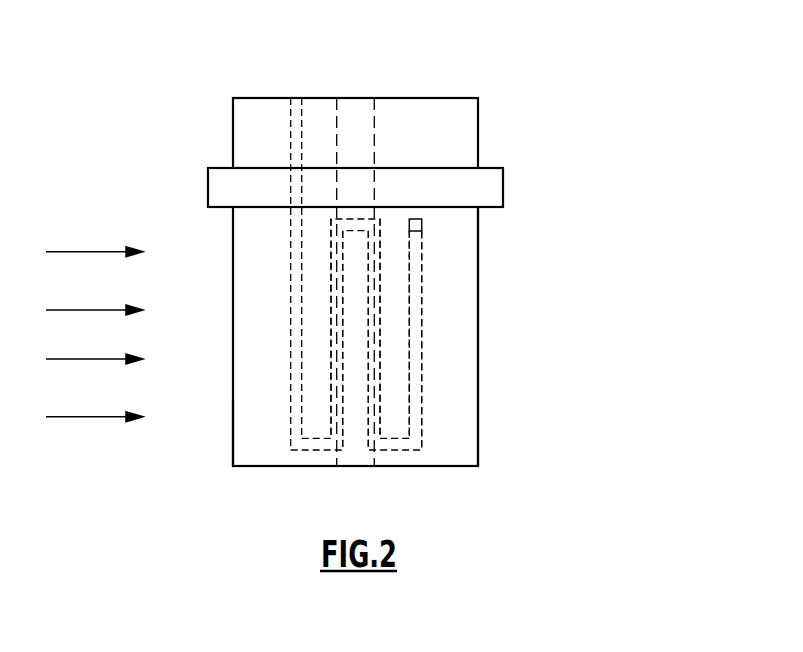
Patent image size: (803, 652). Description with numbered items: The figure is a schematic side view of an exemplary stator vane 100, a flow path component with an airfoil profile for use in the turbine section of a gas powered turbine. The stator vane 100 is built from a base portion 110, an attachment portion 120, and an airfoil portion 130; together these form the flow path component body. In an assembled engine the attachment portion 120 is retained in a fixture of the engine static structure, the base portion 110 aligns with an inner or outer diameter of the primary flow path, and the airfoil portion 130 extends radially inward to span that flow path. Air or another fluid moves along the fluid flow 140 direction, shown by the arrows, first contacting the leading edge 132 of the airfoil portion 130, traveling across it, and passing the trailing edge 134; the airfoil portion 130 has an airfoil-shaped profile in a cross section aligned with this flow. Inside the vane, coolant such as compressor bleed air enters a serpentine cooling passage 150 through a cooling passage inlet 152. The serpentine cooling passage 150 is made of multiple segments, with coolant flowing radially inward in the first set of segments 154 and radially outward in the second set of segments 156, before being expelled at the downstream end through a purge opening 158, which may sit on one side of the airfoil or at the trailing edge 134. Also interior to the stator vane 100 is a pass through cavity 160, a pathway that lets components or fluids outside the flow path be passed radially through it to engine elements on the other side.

The stator vane 100 is at (642, 48).
The base portion 110 is at (503, 182).
The attachment portion 120 is at (443, 98).
The airfoil portion 130 is at (478, 395).
The leading edge 132 is at (232, 442).
The trailing edge 134 is at (478, 275).
The fluid flow 140 is at (78, 418).
The serpentine cooling passage 150 is at (298, 128).
The cooling passage inlet 152 is at (296, 97).
The first set of segments 154 is at (296, 363).
The second set of segments 156 is at (413, 377).
The purge opening 158 is at (416, 229).
The pass through cavity 160 is at (360, 127).